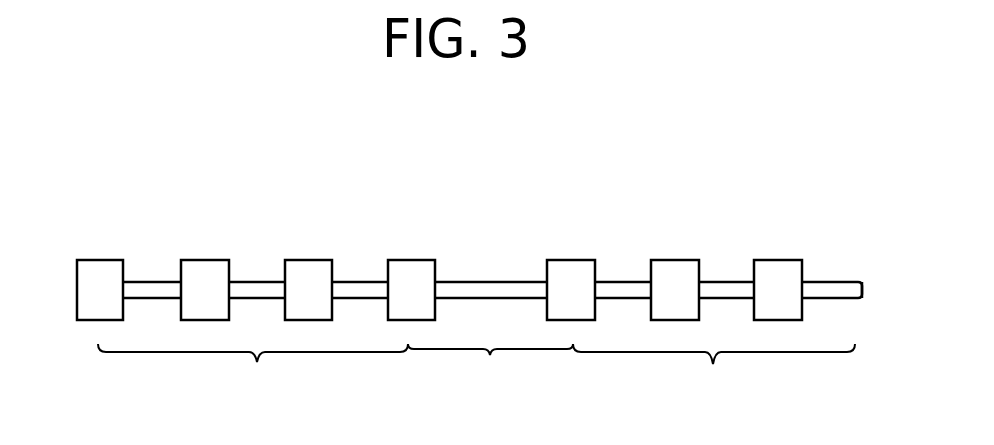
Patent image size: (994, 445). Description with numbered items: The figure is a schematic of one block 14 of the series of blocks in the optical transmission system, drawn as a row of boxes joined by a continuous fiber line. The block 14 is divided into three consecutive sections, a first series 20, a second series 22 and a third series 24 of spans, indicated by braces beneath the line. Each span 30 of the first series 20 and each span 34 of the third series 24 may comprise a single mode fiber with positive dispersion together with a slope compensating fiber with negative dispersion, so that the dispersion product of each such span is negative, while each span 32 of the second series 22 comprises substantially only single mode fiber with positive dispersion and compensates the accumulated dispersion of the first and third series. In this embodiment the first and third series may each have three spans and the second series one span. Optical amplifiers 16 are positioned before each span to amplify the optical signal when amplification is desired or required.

The block 14 is at (781, 151).
The optical amplifiers 16 is at (100, 259).
The first series 20 is at (253, 369).
The second series 22 is at (490, 366).
The third series 24 is at (714, 369).
The spans of the first series 30 is at (150, 282).
The spans of the second series 32 is at (488, 282).
The spans of the third series 34 is at (612, 282).